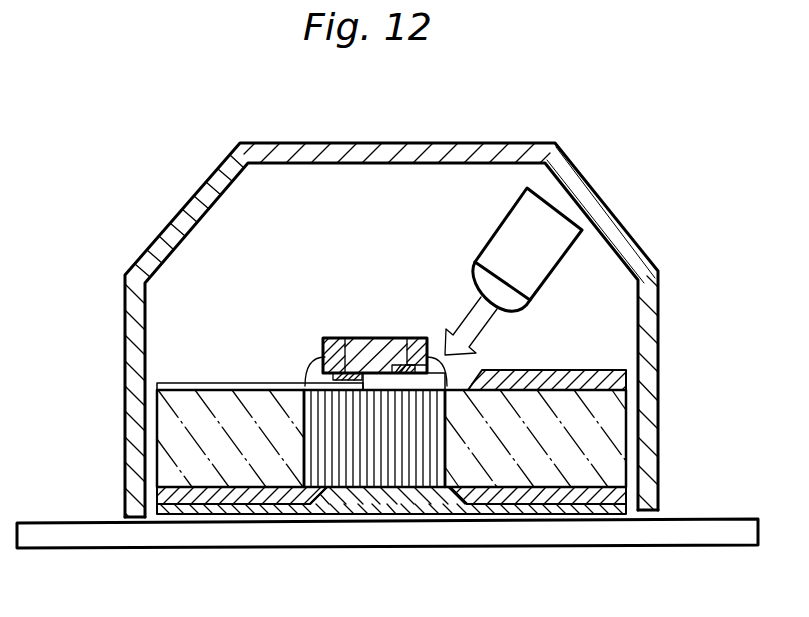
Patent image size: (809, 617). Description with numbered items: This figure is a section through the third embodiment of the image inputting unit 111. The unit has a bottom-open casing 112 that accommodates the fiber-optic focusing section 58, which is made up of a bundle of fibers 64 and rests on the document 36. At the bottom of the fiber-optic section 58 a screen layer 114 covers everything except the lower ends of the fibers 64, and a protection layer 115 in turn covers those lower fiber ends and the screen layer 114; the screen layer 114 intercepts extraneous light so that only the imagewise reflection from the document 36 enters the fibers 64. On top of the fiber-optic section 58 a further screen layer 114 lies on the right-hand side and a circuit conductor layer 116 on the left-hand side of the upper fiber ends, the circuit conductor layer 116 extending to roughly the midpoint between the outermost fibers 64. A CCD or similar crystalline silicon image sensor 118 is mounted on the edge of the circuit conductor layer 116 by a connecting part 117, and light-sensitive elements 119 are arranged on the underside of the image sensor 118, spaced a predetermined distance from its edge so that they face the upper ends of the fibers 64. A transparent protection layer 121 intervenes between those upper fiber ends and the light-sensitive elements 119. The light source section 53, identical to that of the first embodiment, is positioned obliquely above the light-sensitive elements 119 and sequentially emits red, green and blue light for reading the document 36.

The document 36 is at (712, 533).
The light source section 53 is at (548, 222).
The fiber-optic section 58 is at (600, 453).
The fibers 64 is at (437, 494).
The inputting unit 111 is at (683, 255).
The bottom-open casing 112 is at (622, 222).
The screen layer 114 is at (583, 370).
The protection layer 115 is at (322, 504).
The circuit conductor layer 116 is at (226, 383).
The connecting part 117 is at (340, 338).
The image sensor 118 is at (375, 338).
The light-sensitive elements 119 is at (400, 338).
The transparent protection layer 121 is at (485, 361).